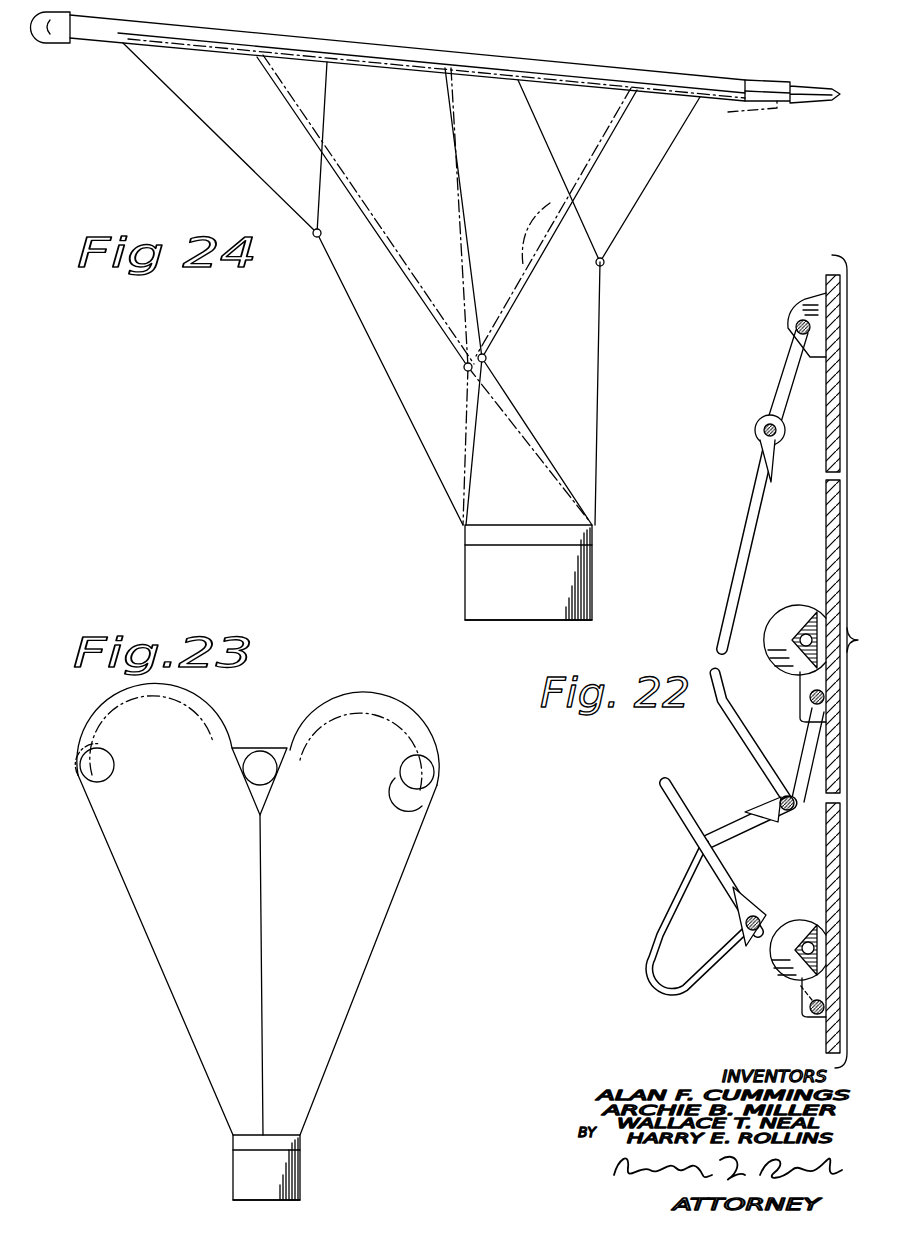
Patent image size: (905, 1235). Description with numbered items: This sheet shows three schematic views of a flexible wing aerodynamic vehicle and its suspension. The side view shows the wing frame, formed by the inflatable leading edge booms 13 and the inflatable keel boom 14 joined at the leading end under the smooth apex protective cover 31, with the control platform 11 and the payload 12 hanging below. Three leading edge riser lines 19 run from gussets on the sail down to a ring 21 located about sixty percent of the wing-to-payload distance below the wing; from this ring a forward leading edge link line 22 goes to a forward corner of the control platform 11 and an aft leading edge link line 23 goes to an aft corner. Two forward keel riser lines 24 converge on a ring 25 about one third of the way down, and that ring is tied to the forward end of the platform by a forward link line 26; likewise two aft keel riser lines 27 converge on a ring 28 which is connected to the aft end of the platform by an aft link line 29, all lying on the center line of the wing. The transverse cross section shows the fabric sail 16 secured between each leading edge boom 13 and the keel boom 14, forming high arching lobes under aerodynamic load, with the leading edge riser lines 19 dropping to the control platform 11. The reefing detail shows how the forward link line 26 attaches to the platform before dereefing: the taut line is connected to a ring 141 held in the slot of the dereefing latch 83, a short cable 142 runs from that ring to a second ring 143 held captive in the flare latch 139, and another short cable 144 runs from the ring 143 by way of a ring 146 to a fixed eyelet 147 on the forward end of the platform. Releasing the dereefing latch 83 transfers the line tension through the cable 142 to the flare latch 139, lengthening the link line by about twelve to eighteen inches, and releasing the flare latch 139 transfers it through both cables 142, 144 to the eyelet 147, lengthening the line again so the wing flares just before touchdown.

In FIG. 24, the control platform 11 is at (575, 540).
In FIG. 23, the control platform 11 is at (290, 1145).
In FIG. 22, the control platform 11 is at (827, 827).
In FIG. 24, the payload 12 is at (582, 578).
In FIG. 23, the payload 12 is at (292, 1175).
In FIG. 24, the leading edge boom 13 is at (668, 70).
In FIG. 23, the leading edge boom 13 is at (117, 763).
In FIG. 24, the keel boom 14 is at (790, 88).
In FIG. 23, the keel boom 14 is at (265, 775).
In FIG. 23, the fabric sail 16 is at (313, 717).
In FIG. 24, the leading edge riser line 19 is at (367, 213).
In FIG. 23, the leading edge riser line 19 is at (132, 883).
In FIG. 24, the ring 21 is at (487, 358).
In FIG. 24, the forward leading edge link line 22 is at (470, 437).
In FIG. 24, the aft leading edge link line 23 is at (520, 413).
In FIG. 24, the forward keel riser line 24 is at (320, 173).
In FIG. 24, the ring 25 is at (321, 236).
In FIG. 24, the forward link line 26 is at (403, 410).
In FIG. 22, the forward link line 26 is at (680, 808).
In FIG. 24, the aft keel riser line 27 is at (633, 210).
In FIG. 24, the ring 28 is at (605, 262).
In FIG. 24, the aft link line 29 is at (603, 330).
In FIG. 24, the apex protective cover 31 is at (52, 32).
In FIG. 22, the dereefing latch 83 is at (813, 913).
In FIG. 22, the flare latch 139 is at (793, 612).
In FIG. 22, the ring 141 is at (787, 987).
In FIG. 22, the cable 142 is at (670, 895).
In FIG. 22, the ring 143 is at (803, 743).
In FIG. 22, the cable 144 is at (717, 710).
In FIG. 22, the ring 146 is at (787, 372).
In FIG. 22, the fixed eyelet 147 is at (807, 300).